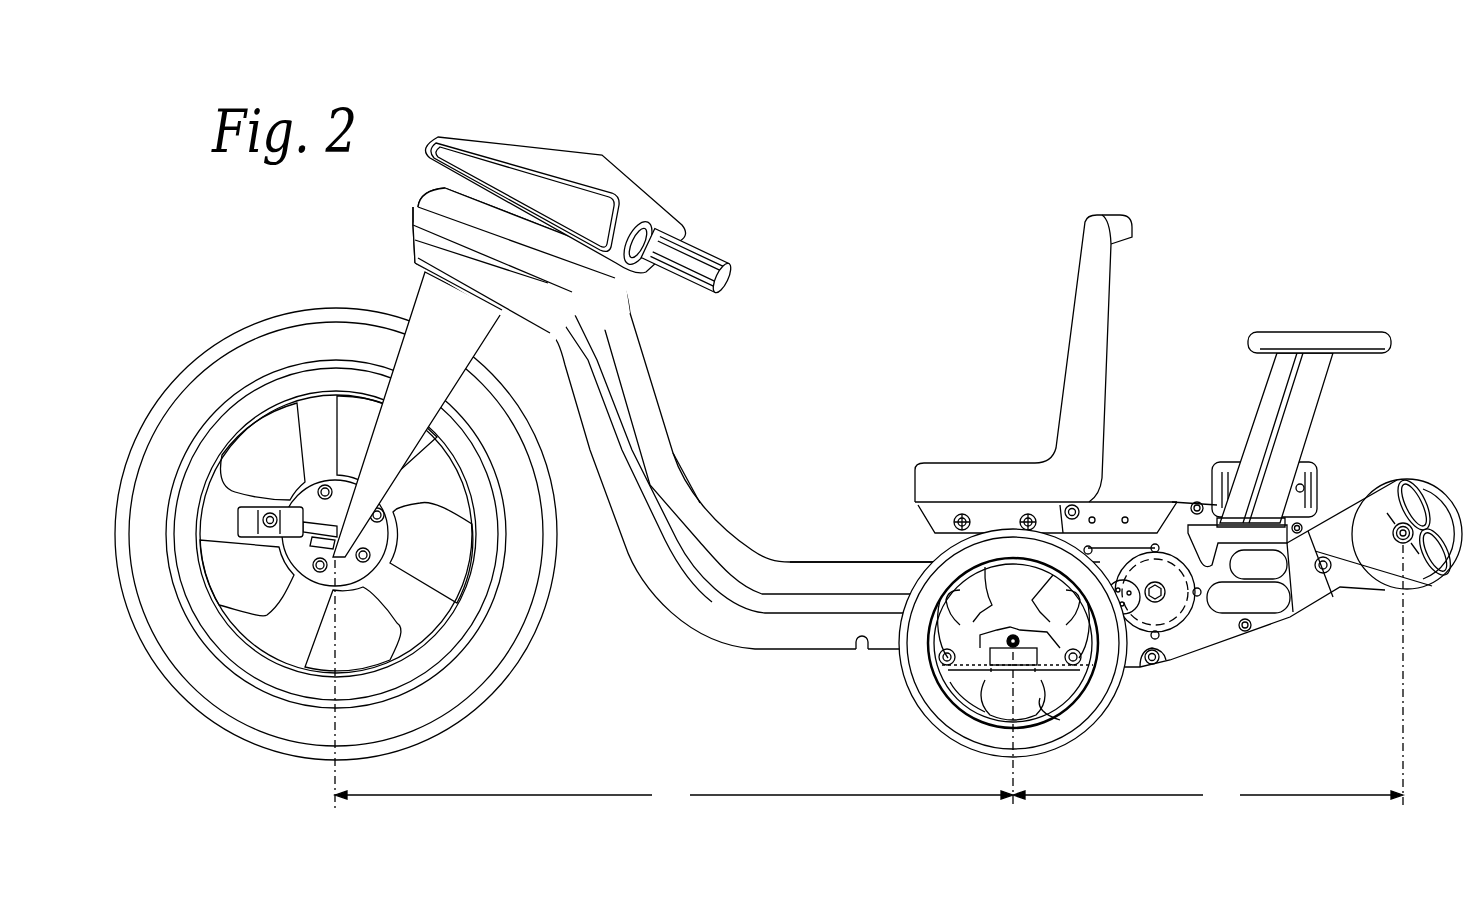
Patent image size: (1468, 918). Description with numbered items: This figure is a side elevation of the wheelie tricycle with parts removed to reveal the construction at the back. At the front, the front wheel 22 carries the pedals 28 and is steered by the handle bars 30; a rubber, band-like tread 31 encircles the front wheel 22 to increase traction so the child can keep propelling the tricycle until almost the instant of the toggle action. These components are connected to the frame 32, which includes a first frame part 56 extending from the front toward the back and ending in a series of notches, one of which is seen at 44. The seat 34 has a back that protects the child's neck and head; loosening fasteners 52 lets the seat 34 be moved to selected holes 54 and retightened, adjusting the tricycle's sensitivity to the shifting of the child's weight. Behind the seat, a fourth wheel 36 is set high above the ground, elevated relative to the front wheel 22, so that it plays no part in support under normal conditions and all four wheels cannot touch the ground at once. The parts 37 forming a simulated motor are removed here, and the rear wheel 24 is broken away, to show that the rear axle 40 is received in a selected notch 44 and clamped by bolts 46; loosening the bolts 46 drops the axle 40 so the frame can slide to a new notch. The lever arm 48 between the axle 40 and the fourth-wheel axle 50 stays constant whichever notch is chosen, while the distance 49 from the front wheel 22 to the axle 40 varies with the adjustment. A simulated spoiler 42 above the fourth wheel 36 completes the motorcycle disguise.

The front wheel 22 is at (477, 670).
The rear wheel 24 is at (1103, 705).
The pedals 28 is at (248, 526).
The handle bars 30 is at (694, 250).
The tread 31 is at (537, 636).
The frame 32 is at (762, 505).
The seat 34 is at (1108, 318).
The fourth wheel 36 is at (1416, 588).
The parts forming the motor 37 is at (1182, 482).
The rear axle 40 is at (1015, 630).
The simulated spoiler 42 is at (1323, 330).
The notch 44 is at (862, 662).
The bolts 46 is at (993, 672).
The lever arm 48 is at (1208, 796).
The front wheelbase dimension 49 is at (674, 796).
The axle for the fourth wheel 50 is at (1398, 523).
The fasteners 52 is at (1027, 514).
The holes 54 is at (1094, 517).
The first frame part 56 is at (850, 558).